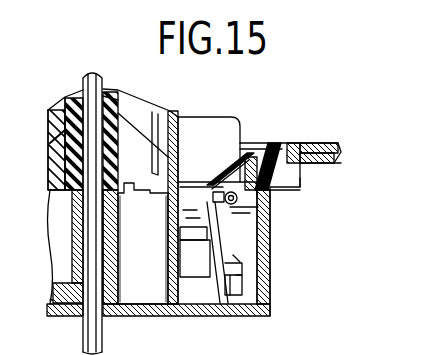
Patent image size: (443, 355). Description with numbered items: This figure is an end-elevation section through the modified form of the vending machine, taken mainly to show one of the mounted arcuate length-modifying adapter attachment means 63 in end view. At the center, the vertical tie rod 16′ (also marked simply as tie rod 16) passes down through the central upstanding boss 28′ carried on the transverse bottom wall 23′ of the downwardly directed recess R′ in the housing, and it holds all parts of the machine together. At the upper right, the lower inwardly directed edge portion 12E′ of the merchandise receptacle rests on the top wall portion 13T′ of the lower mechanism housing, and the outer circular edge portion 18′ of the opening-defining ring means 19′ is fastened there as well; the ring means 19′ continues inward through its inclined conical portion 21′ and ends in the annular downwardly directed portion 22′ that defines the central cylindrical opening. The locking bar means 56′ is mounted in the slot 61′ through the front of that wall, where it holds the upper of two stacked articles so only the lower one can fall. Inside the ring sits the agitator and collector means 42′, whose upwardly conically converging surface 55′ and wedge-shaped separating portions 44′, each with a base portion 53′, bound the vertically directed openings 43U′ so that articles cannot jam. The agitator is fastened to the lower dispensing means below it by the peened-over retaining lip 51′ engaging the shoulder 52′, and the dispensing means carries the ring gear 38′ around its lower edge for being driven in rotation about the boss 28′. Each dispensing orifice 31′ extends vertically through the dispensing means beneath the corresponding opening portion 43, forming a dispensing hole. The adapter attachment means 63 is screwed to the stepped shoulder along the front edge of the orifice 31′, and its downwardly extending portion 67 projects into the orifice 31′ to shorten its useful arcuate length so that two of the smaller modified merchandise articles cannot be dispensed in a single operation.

The vertical tie rod 16′ is at (100, 76).
The shoulder 52′ is at (64, 183).
The retaining lip 51′ is at (77, 215).
The upwardly conically converging surface 55′ is at (156, 112).
The locking bar means 56′ is at (173, 187).
The vertical tie rod 16 is at (170, 210).
The separating non-apertured portion 44′ is at (243, 121).
The merchandise agitator and collector means 42′ is at (188, 111).
The vertically directed opening 43U′ is at (212, 121).
The opening-defining ring means 19′ is at (235, 157).
The inclined conical portion 21′ is at (226, 154).
The base portion 53′ is at (243, 146).
The lower inwardly directed edge portion 12E′ is at (300, 146).
The top wall portion 13T′ is at (335, 150).
The outer circular edge portion 18′ is at (301, 181).
The slot 61′ is at (240, 199).
The annular downwardly directed portion 22′ is at (215, 201).
The opening portion 43 is at (228, 203).
The arcuate length-modifying adapter attachment means 63 is at (178, 243).
The dispensing orifice 31′ is at (214, 306).
The downwardly extending portion 67 is at (243, 268).
The downwardly directed recess R′ is at (237, 261).
The ring gear 38′ is at (235, 294).
The transverse bottom wall 23′ is at (145, 312).
The upstanding boss 28′ is at (113, 292).